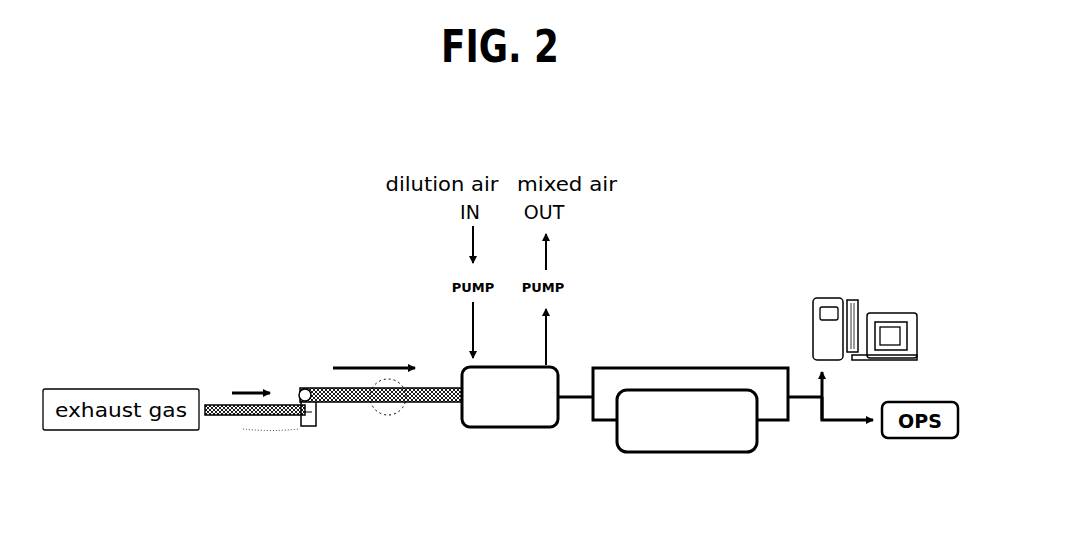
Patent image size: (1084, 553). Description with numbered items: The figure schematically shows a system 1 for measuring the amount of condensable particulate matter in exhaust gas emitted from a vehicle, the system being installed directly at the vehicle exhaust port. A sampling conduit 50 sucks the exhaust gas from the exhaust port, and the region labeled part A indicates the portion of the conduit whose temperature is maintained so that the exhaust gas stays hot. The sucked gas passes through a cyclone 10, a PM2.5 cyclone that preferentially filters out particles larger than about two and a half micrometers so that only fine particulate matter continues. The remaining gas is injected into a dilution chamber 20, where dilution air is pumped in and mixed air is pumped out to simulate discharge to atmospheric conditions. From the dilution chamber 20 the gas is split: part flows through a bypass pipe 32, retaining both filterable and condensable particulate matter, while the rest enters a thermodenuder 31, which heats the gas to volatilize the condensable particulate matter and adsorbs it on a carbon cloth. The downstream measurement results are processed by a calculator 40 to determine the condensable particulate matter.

The system 1 is at (738, 217).
The cyclone 10 is at (318, 424).
The dilution chamber 20 is at (520, 427).
The thermodenuder 31 is at (708, 452).
The bypass pipe 32 is at (690, 368).
The calculator 40 is at (870, 313).
The sampling conduit 50 is at (283, 405).
The part A is at (316, 424).